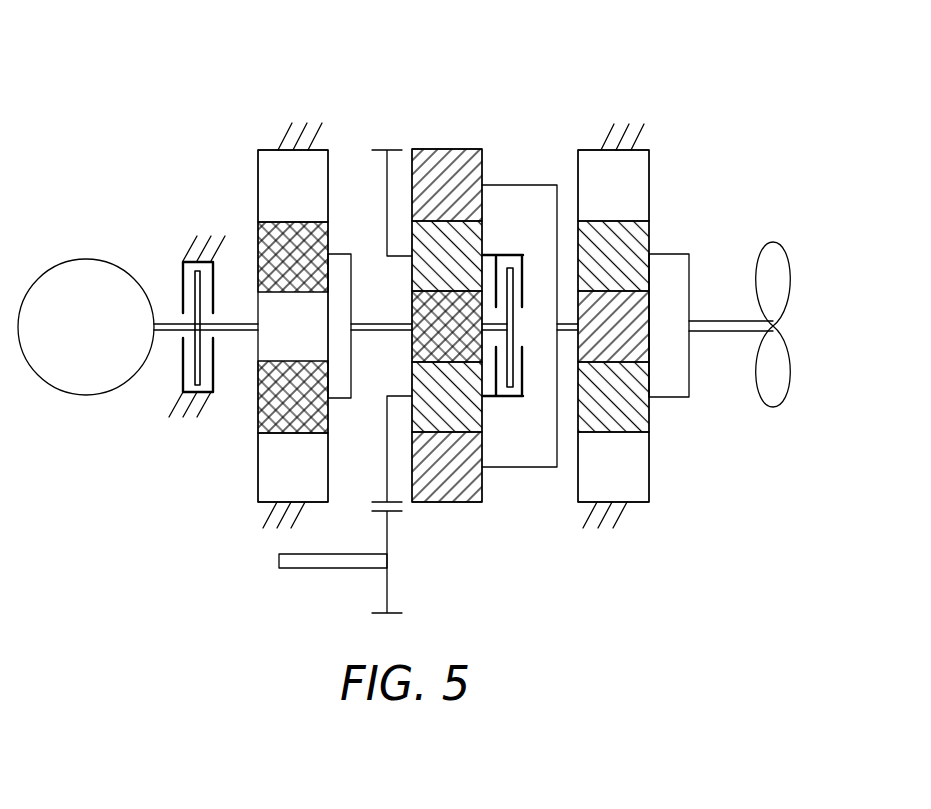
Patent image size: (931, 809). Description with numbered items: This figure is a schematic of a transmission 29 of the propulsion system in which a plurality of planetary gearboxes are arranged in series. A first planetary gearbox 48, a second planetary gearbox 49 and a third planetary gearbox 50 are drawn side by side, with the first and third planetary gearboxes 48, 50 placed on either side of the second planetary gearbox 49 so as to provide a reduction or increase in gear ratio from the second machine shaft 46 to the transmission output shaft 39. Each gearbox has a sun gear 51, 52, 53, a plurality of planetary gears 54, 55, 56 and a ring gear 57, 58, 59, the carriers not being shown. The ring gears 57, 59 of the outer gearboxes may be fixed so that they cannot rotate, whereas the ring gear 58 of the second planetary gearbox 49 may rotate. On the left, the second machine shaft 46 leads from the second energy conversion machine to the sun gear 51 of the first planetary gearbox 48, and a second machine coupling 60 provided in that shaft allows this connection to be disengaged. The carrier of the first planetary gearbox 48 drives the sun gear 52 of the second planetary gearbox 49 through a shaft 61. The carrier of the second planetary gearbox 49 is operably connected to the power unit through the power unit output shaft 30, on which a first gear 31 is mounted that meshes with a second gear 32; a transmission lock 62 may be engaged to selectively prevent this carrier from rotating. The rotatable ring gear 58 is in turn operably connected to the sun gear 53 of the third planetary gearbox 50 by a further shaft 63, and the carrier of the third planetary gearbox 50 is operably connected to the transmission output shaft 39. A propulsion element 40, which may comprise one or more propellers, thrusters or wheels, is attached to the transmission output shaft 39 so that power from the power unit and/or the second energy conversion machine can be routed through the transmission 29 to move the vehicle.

The transmission 29 is at (454, 73).
The power unit output shaft 30 is at (323, 568).
The first gear 31 is at (387, 595).
The second gear 32 is at (387, 465).
The transmission output shaft 39 is at (722, 321).
The propulsion element 40 is at (774, 242).
The second machine shaft 46 is at (160, 324).
The first planetary gearbox 48 is at (260, 293).
The second planetary gearbox 49 is at (451, 280).
The third planetary gearbox 50 is at (658, 293).
The sun gear 51 is at (328, 338).
The sun gear 52 is at (412, 302).
The sun gear 53 is at (649, 338).
The planetary gears 54 is at (258, 232).
The planetary gears 55 is at (412, 270).
The planetary gears 56 is at (649, 232).
The ring gear 57 is at (258, 178).
The ring gear 58 is at (448, 149).
The ring gear 59 is at (649, 168).
The second machine coupling 60 is at (183, 390).
The shaft 61 is at (340, 254).
The transmission lock 62 is at (513, 255).
The shaft 63 is at (512, 185).